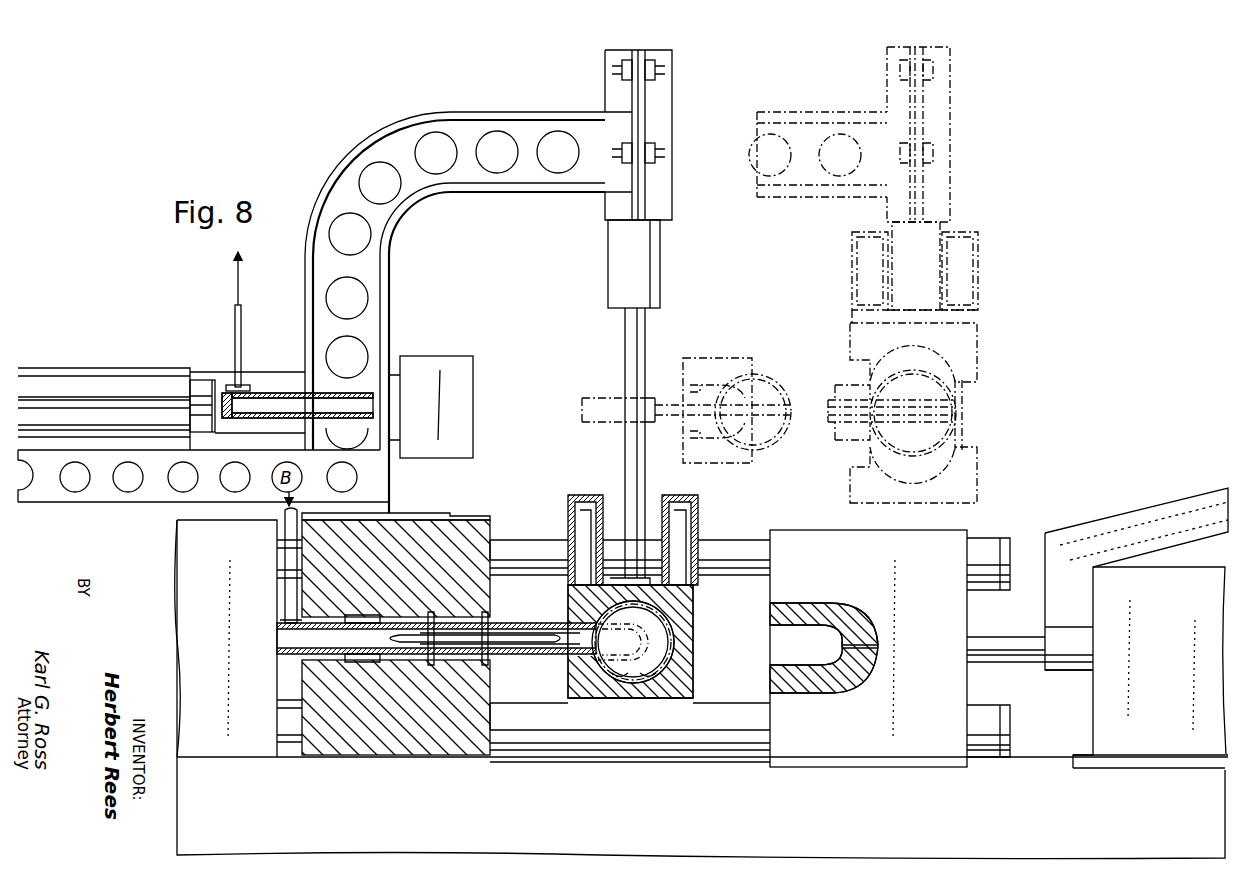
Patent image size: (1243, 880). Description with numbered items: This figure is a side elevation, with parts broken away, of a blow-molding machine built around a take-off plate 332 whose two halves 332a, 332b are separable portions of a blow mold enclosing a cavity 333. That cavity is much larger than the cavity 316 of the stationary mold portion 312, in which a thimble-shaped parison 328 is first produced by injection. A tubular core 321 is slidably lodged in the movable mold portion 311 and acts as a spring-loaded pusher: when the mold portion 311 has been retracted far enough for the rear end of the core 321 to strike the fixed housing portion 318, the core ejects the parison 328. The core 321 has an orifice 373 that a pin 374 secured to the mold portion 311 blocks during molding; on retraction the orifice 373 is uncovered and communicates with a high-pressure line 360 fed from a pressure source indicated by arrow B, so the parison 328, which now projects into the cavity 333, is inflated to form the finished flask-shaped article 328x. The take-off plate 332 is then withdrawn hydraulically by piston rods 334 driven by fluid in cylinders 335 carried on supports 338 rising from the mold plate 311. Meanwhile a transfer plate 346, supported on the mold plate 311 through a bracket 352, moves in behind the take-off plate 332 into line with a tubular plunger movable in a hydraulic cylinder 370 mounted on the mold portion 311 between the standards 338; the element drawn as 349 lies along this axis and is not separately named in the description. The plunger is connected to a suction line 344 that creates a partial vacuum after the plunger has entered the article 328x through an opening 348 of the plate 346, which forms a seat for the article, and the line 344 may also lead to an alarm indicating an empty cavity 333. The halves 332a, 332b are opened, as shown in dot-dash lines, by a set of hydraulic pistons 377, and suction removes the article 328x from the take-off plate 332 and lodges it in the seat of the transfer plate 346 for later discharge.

The movable mold portion 311 is at (372, 742).
The stationary mold portion 312 is at (926, 762).
The cavity 316 is at (838, 610).
The fixed housing portion 318 is at (190, 617).
The core 321 is at (502, 560).
The parison 328 is at (672, 638).
The finished flask-shaped article 328x is at (612, 684).
The take-off plate 332 is at (975, 416).
The take-off plate half 332a is at (977, 470).
The take-off plate half 332b is at (977, 344).
The cavity 333 is at (648, 700).
The piston rods 334 is at (624, 323).
The cylinders 335 is at (674, 90).
The supports 338 is at (396, 225).
The suction line 344 is at (236, 306).
The transfer plate 346 is at (448, 375).
The opening 348 is at (686, 392).
The hatched rod 349 is at (287, 394).
The bracket 352 is at (258, 372).
The high-pressure line 360 is at (284, 556).
The hydraulic cylinder 370 is at (200, 382).
The orifice 373 is at (623, 642).
The pin 374 is at (540, 636).
The hydraulic pistons 377 is at (675, 500).